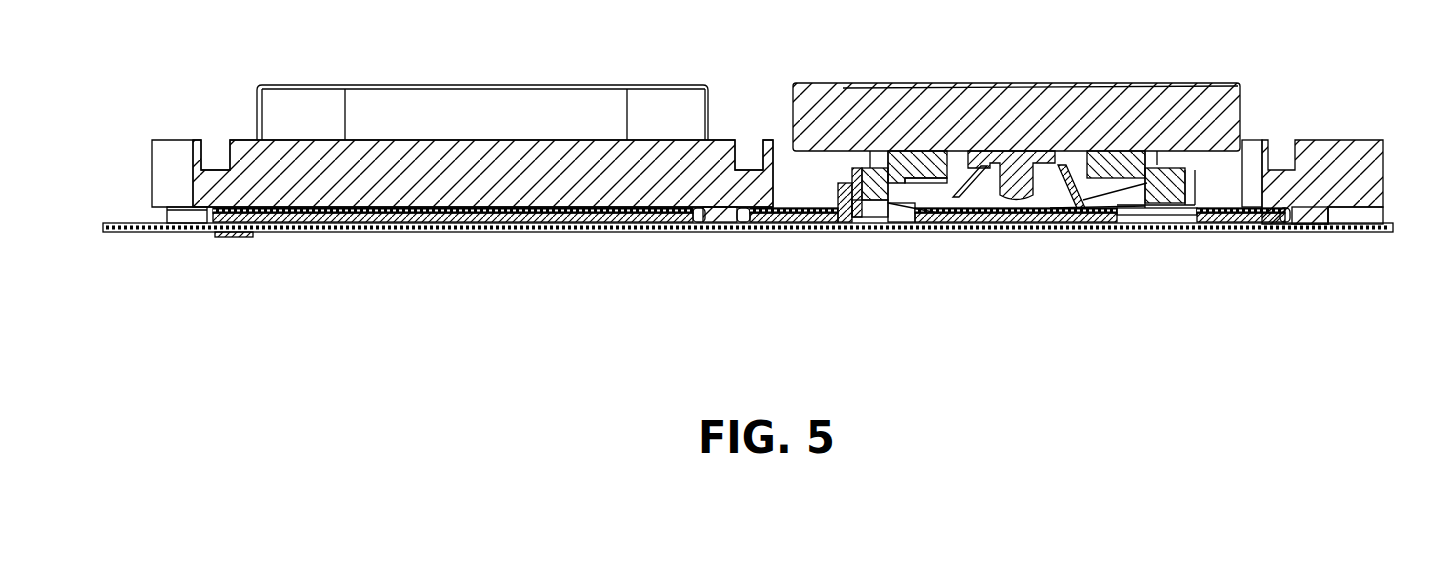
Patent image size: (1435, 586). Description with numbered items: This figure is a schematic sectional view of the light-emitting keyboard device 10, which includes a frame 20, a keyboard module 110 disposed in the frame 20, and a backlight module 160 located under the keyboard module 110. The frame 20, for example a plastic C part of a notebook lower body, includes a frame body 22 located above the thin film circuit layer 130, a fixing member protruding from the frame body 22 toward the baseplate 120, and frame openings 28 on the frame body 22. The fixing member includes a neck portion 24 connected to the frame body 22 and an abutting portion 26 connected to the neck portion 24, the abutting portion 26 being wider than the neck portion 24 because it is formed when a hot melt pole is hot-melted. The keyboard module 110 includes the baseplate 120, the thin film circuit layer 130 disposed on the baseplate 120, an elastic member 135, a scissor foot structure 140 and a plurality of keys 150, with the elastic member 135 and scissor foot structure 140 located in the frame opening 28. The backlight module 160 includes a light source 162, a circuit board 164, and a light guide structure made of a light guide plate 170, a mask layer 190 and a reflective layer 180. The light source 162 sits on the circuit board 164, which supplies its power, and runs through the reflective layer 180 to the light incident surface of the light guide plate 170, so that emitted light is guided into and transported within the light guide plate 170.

The light-emitting keyboard device 10 is at (1426, 397).
The frame 20 is at (767, 245).
The frame body 22 is at (1372, 183).
The neck portion 24 is at (1307, 259).
The abutting portion 26 is at (1308, 235).
The frame openings 28 is at (1247, 184).
The keyboard module 110 is at (1016, 216).
The baseplate 120 is at (812, 222).
The thin film circuit layer 130 is at (985, 222).
The elastic member 135 is at (985, 166).
The scissor foot structure 140 is at (1075, 118).
The keys 150 is at (1061, 231).
The backlight module 160 is at (705, 259).
The light source 162 is at (240, 236).
The circuit board 164 is at (233, 237).
The light guide plate 170 is at (1150, 232).
The reflective layer 180 is at (1092, 232).
The mask layer 190 is at (1165, 240).